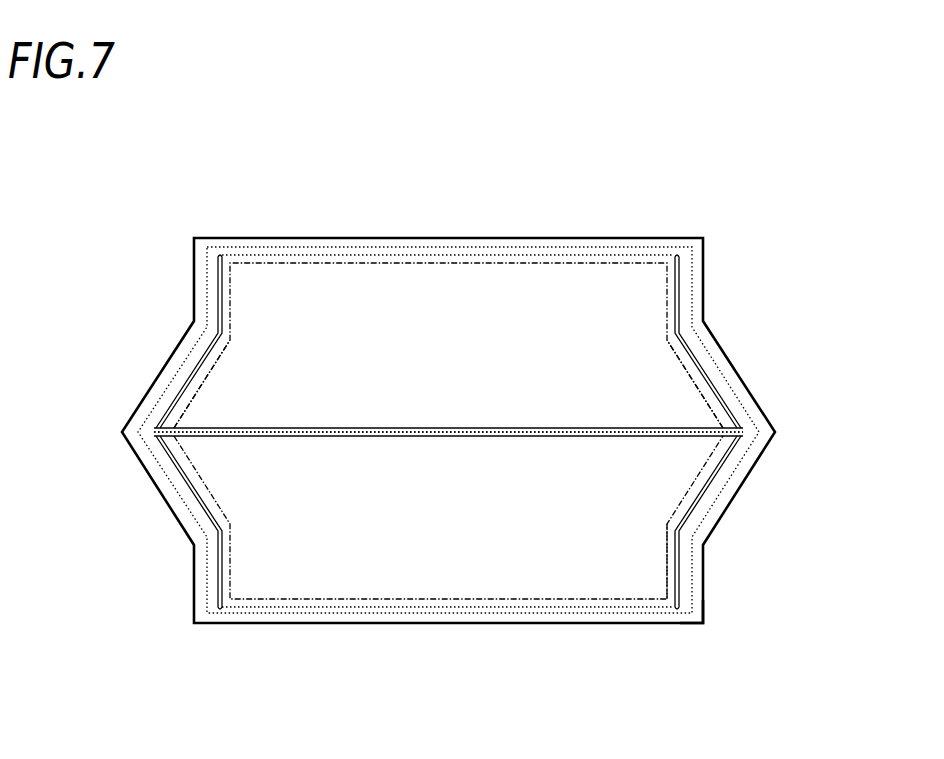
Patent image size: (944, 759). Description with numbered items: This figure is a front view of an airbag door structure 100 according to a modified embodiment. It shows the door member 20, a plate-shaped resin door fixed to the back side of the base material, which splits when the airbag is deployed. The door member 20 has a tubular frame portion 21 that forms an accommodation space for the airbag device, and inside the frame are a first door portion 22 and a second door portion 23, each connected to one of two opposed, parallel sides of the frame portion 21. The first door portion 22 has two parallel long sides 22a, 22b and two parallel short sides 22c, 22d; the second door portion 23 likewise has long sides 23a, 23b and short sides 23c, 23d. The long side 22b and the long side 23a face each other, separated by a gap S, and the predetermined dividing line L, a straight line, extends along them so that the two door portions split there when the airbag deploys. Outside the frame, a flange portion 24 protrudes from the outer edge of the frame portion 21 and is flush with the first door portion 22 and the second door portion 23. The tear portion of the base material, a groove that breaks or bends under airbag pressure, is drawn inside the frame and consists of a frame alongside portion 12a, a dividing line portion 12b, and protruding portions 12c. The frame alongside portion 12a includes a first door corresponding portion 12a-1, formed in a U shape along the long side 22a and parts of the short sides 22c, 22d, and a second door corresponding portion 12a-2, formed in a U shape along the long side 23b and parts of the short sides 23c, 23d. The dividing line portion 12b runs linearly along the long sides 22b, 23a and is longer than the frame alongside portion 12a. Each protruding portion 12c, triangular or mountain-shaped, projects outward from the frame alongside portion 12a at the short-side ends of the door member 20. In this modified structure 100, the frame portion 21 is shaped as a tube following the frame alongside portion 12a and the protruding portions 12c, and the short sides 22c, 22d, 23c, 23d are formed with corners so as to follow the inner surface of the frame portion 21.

The airbag door structure 100 is at (734, 219).
The door member 20 is at (203, 250).
The frame portion 21 is at (653, 250).
The first door portion 22 is at (446, 304).
The long side 22a is at (592, 247).
The long side 22b is at (360, 428).
The short side 22c is at (220, 313).
The short side 22d is at (687, 288).
The second door portion 23 is at (450, 561).
The long side 23a is at (318, 440).
The long side 23b is at (603, 623).
The short side 23c is at (207, 517).
The short side 23d is at (690, 508).
The flange portion 24 is at (697, 623).
The frame alongside portion 12a is at (448, 433).
The first door corresponding portion 12a-1 is at (474, 265).
The second door corresponding portion 12a-2 is at (498, 615).
The dividing line portion 12b is at (660, 608).
The protruding portion 12c is at (183, 367).
The gap S is at (773, 431).
The predetermined dividing line L is at (518, 426).